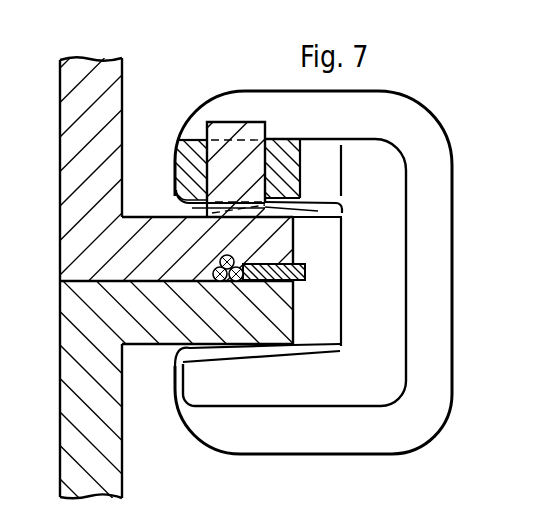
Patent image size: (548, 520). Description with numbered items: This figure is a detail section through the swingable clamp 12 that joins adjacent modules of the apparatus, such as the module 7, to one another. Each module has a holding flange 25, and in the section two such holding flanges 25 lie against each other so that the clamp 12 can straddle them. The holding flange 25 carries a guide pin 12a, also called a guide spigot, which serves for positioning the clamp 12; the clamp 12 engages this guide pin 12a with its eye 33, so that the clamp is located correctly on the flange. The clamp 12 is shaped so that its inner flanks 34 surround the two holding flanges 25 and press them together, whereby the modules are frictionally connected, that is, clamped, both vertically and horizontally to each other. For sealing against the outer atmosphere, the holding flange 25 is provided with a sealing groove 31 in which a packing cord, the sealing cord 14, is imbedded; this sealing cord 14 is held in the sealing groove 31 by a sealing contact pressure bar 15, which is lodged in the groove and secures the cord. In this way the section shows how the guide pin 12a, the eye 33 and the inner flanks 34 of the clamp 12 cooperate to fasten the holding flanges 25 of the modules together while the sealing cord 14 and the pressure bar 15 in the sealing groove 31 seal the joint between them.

The module 7 is at (268, 288).
The swingable clamp 12 is at (341, 272).
The guide pin 12a is at (236, 131).
The sealing cord 14 is at (228, 294).
The sealing contact pressure bar 15 is at (305, 274).
The holding flange 25 is at (207, 273).
The sealing groove 31 is at (210, 244).
The eye 33 is at (184, 134).
The inner flank 34 is at (268, 268).